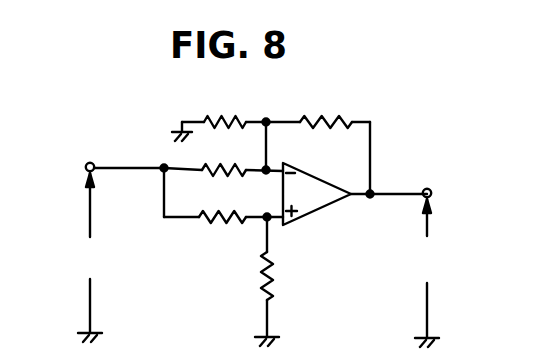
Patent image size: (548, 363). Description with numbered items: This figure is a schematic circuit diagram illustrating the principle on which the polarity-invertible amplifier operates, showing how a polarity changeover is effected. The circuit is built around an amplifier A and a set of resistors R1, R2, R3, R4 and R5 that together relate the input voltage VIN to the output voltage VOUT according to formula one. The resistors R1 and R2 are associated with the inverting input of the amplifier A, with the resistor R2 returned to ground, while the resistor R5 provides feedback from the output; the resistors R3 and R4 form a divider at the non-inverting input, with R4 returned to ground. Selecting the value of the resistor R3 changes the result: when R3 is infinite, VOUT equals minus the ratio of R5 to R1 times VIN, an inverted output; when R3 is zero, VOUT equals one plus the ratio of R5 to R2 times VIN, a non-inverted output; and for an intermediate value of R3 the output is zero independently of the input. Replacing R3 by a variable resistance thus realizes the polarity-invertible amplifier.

The resistor R1 is at (242, 156).
The resistor R2 is at (236, 114).
The resistor R3 is at (241, 234).
The resistor R4 is at (280, 281).
The resistor R5 is at (335, 140).
The amplifier A is at (355, 194).
The input voltage VIN is at (120, 252).
The output voltage VOUT is at (435, 268).